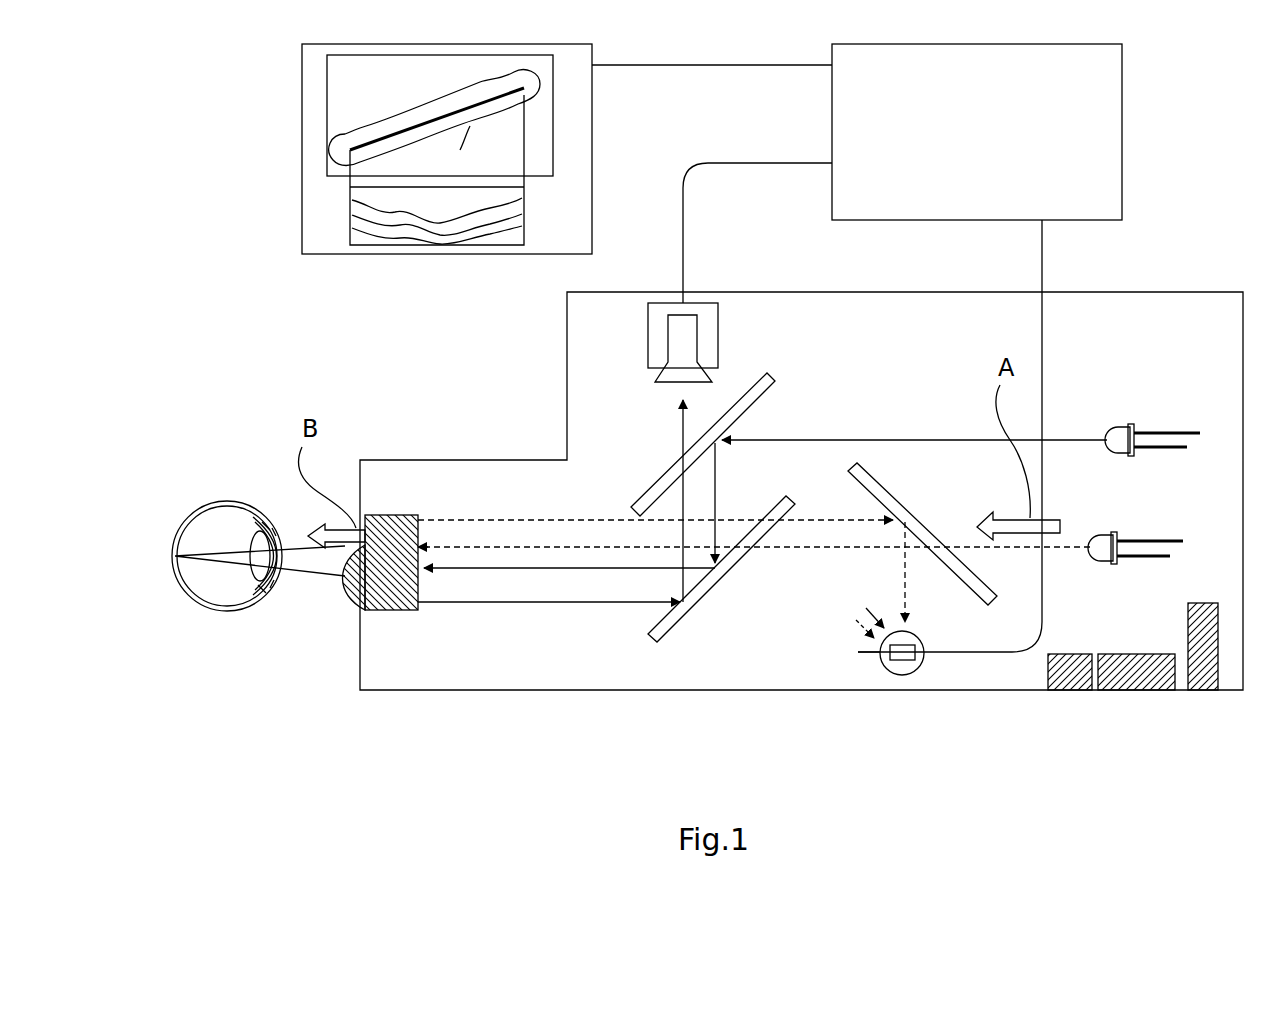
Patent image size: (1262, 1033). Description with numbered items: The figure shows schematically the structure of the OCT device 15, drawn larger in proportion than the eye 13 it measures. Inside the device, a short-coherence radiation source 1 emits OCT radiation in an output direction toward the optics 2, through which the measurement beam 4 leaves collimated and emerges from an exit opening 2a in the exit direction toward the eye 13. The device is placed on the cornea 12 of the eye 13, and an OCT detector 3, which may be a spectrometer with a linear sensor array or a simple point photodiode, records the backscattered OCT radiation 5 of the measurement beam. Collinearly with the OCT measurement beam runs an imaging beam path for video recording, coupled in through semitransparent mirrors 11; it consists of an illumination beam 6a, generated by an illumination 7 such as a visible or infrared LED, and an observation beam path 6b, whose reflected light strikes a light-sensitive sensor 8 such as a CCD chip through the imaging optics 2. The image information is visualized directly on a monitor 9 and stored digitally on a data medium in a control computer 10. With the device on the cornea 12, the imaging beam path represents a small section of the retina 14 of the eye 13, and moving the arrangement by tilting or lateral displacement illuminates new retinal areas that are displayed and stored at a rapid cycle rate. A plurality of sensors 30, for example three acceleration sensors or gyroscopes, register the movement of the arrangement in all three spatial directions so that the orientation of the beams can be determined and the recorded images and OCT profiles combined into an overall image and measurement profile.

The short-coherence radiation source 1 is at (1104, 566).
The optics 2 is at (380, 612).
The exit opening 2a is at (340, 596).
The OCT detector 3 is at (924, 640).
The measurement beam 4 is at (815, 548).
The backscattered OCT radiation 5 is at (900, 565).
The illumination beam 6a is at (900, 440).
The observation beam path 6b is at (680, 434).
The illumination 7 is at (1122, 410).
The light-sensitive sensor 8 is at (718, 325).
The monitor 9 is at (432, 254).
The control computer 10 is at (995, 142).
The semitransparent mirrors 11 is at (776, 400).
The cornea 12 is at (286, 596).
The eye 13 is at (220, 598).
The retina 14 is at (252, 566).
The OCT device 15 is at (612, 690).
The sensors 30 is at (1198, 692).